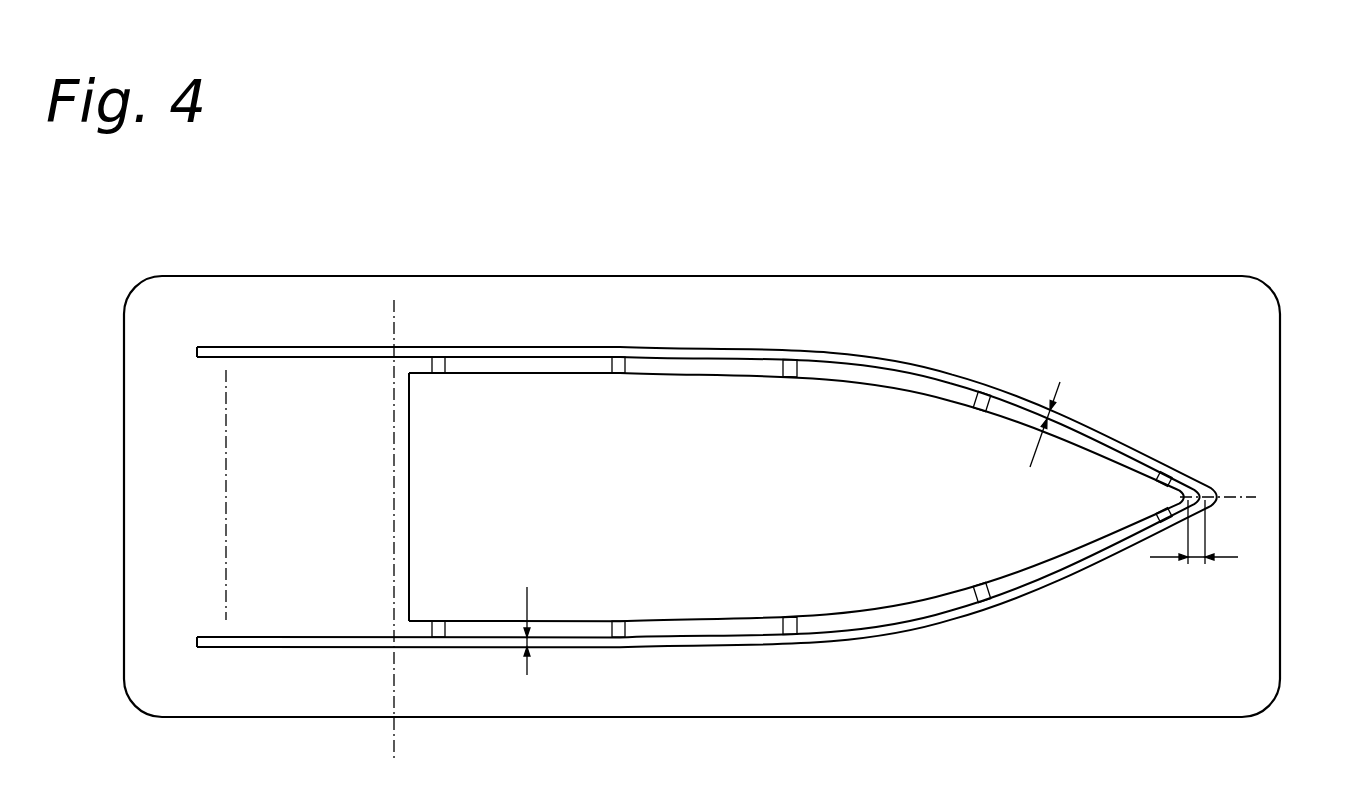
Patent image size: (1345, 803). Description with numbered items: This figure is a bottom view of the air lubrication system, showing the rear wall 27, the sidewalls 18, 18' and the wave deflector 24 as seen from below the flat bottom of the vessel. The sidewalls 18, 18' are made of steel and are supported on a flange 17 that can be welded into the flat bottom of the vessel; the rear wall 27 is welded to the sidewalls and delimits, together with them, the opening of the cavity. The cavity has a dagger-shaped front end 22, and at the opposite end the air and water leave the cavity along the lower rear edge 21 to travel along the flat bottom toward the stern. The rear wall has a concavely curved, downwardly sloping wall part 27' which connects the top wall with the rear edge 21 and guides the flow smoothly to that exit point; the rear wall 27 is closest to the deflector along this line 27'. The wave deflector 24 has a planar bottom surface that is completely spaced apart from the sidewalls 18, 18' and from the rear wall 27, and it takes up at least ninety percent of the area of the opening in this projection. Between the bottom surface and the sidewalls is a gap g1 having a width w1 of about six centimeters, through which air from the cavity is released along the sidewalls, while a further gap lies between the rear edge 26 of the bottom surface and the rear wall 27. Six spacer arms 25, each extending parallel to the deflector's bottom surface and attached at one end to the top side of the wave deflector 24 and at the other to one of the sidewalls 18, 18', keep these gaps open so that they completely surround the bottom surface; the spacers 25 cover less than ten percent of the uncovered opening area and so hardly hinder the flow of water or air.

The flange 17 is at (1219, 682).
The sidewall 18 is at (707, 643).
The sidewall 18' is at (707, 342).
The rear edge 21 is at (226, 467).
The front end 22 is at (1233, 500).
The wave deflector 24 is at (759, 492).
The spacer arm 25 is at (438, 360).
The rear edge of the bottom surface 26 is at (409, 460).
The rear wall 27 is at (313, 520).
The wall part 27' is at (365, 548).
The width w1 is at (1060, 420).
The gap g1 is at (1185, 488).